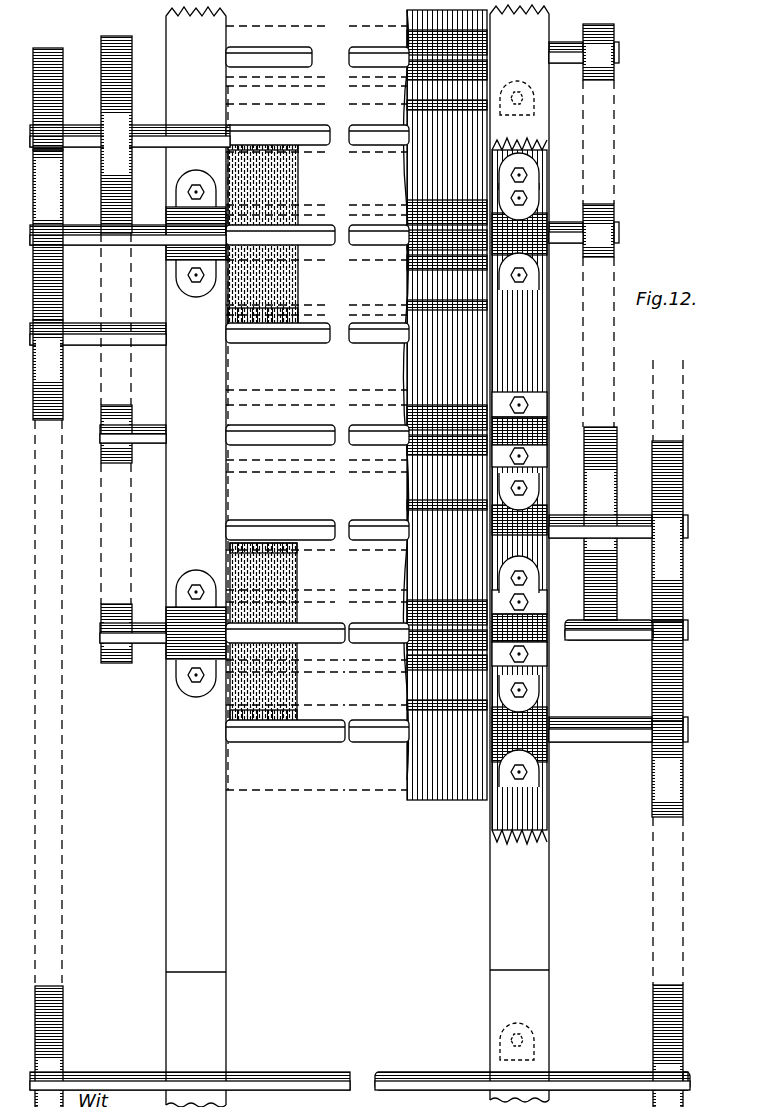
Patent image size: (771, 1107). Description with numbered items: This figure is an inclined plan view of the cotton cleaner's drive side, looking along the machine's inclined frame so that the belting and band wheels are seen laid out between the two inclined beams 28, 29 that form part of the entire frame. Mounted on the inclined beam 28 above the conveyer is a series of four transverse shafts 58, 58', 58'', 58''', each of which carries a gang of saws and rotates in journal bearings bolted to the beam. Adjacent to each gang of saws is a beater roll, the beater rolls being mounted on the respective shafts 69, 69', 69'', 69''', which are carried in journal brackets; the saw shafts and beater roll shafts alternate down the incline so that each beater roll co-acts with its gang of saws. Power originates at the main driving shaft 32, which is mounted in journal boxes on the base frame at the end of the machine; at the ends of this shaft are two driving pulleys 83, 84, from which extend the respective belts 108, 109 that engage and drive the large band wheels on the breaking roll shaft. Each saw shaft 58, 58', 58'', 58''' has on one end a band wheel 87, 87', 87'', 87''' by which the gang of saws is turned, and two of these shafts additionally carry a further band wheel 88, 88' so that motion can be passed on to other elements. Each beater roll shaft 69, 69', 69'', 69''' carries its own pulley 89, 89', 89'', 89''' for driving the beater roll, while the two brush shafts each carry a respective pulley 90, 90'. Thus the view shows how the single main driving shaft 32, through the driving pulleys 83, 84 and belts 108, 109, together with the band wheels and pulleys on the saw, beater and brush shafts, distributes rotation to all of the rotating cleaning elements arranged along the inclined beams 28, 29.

The inclined beam 28 is at (535, 820).
The inclined beam 29 is at (357, 556).
The main driving shaft 32 is at (418, 1072).
The transverse shaft 58 is at (317, 118).
The transverse shaft 58' is at (317, 349).
The transverse shaft 58'' is at (317, 515).
The transverse shaft 58''' is at (317, 746).
The beater roll shaft 69 is at (317, 47).
The beater roll shaft 69' is at (317, 224).
The beater roll shaft 69'' is at (317, 424).
The beater roll shaft 69''' is at (317, 622).
The driving pulley 83 is at (675, 1055).
The driving pulley 84 is at (50, 1065).
The band wheel 87 is at (65, 88).
The band wheel 87' is at (65, 370).
The band wheel 87'' is at (638, 531).
The band wheel 87''' is at (643, 778).
The additional band wheel 88 is at (127, 119).
The additional band wheel 88' is at (609, 533).
The pulley 89 is at (597, 44).
The pulley 89' is at (601, 220).
The pulley 89'' is at (133, 451).
The pulley 89''' is at (133, 660).
The brush shaft pulley 90 is at (130, 235).
The brush shaft pulley 90' is at (695, 670).
The belt 108 is at (676, 908).
The belt 109 is at (45, 883).